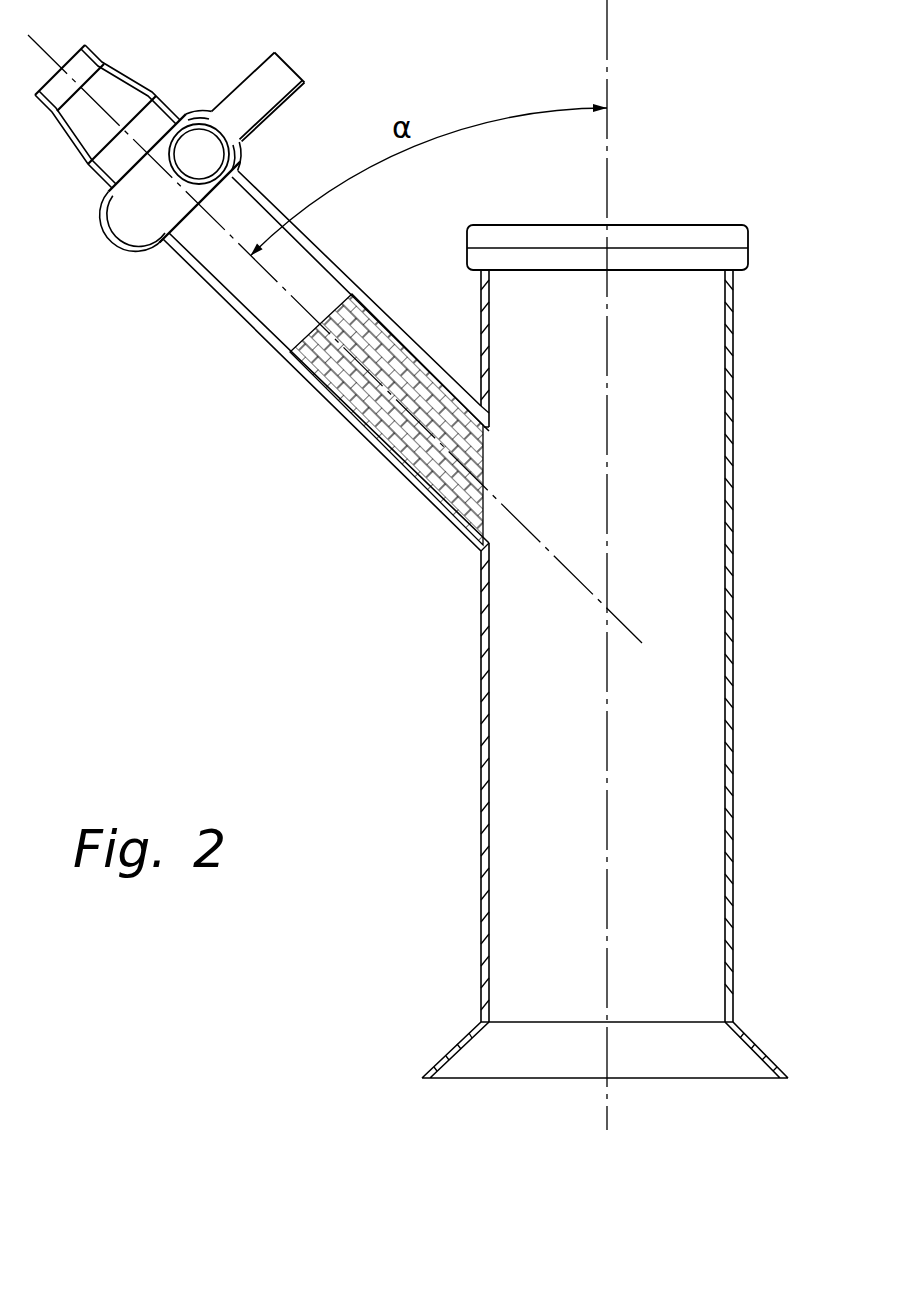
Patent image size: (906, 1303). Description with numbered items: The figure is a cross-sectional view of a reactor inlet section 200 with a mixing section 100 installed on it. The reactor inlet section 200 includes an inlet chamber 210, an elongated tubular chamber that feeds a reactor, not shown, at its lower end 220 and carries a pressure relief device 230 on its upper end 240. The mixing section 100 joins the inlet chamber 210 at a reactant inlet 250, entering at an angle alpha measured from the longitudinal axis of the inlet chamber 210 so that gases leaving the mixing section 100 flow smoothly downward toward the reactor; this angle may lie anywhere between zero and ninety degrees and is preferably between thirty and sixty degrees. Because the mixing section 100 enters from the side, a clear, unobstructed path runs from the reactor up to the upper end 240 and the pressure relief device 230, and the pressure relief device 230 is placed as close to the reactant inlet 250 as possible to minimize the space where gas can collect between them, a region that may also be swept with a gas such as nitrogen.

The mixing section 100 is at (202, 323).
The reactor inlet section 200 is at (768, 475).
The inlet chamber 210 is at (735, 613).
The lower end 220 is at (758, 1046).
The pressure relief device 230 is at (688, 226).
The upper end 240 is at (735, 274).
The reactant inlet 250 is at (484, 481).